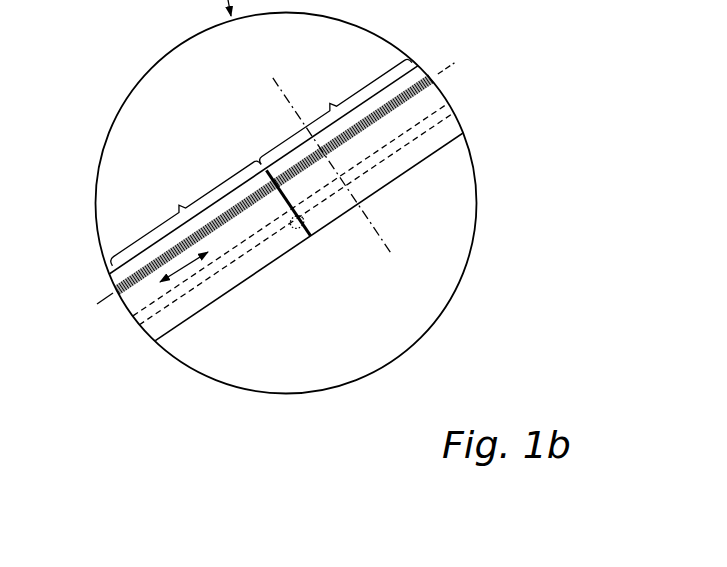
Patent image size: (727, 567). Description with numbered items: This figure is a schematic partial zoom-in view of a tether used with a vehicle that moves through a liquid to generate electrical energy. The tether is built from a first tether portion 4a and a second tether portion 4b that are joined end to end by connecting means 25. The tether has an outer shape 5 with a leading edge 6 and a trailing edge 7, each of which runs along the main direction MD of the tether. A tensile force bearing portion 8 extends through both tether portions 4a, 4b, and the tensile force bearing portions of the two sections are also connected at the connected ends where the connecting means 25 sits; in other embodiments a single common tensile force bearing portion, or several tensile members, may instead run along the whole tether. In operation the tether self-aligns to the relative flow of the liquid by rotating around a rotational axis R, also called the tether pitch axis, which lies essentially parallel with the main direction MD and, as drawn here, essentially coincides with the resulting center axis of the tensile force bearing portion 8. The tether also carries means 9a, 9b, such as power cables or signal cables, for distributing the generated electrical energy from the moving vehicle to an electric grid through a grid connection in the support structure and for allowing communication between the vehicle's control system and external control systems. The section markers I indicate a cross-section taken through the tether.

The first tether portion 4a is at (183, 209).
The second tether portion 4b is at (333, 109).
The outer shape 5 is at (377, 138).
The leading edge 6 is at (289, 148).
The trailing edge 7 is at (338, 225).
The tensile force bearing portion 8 is at (433, 76).
The means for distributing electrical energy 9a is at (428, 117).
The means for distributing electrical energy 9b is at (413, 140).
The connecting means 25 is at (296, 212).
The rotational axis R is at (104, 296).
The main direction MD is at (181, 271).
The section line I is at (277, 73).